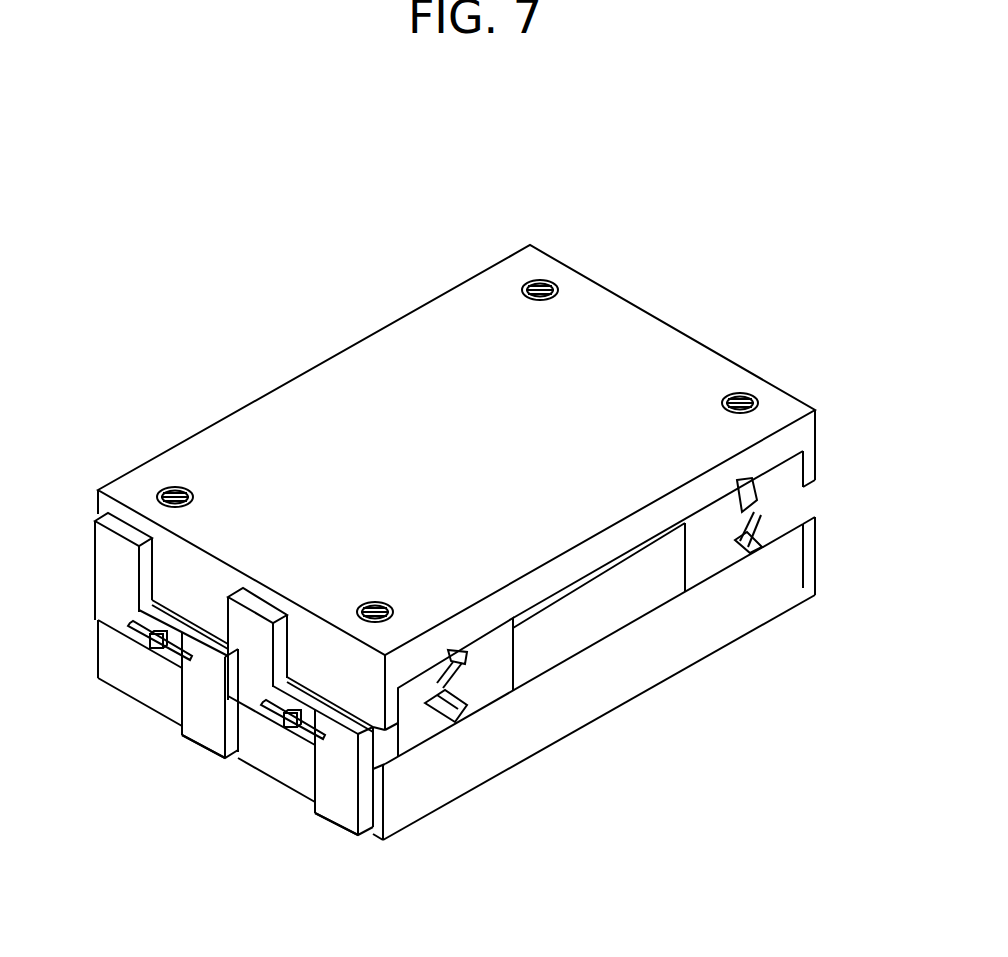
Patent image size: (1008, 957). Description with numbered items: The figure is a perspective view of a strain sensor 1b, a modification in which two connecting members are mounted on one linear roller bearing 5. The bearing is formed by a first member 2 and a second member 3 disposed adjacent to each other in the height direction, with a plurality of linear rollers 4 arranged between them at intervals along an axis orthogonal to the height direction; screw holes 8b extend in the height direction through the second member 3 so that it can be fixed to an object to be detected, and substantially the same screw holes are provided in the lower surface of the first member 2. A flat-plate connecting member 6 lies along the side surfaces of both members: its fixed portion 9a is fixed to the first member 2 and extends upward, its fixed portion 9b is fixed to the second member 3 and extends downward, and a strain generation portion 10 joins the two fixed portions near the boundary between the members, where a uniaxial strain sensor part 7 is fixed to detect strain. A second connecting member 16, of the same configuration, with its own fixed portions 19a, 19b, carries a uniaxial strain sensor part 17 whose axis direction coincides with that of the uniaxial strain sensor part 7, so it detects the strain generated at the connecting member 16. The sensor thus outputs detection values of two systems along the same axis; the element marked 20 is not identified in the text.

The strain sensor 1b is at (380, 186).
The first member 2 is at (590, 688).
The second member 3 is at (330, 408).
The linear rollers 4 is at (452, 649).
The linear roller bearing 5 is at (512, 705).
The connecting member 6 is at (203, 764).
The uniaxial strain sensor part 7 is at (155, 650).
The screw holes 8b is at (178, 493).
The fixed portion 9a is at (184, 745).
The fixed portion 9b is at (120, 530).
The strain generation portion 10 is at (140, 640).
The connecting member 16 is at (366, 858).
The uniaxial strain sensor part 17 is at (291, 723).
The fixed portion 19a is at (337, 833).
The fixed portion 19b is at (258, 602).
The bar 20 is at (268, 714).